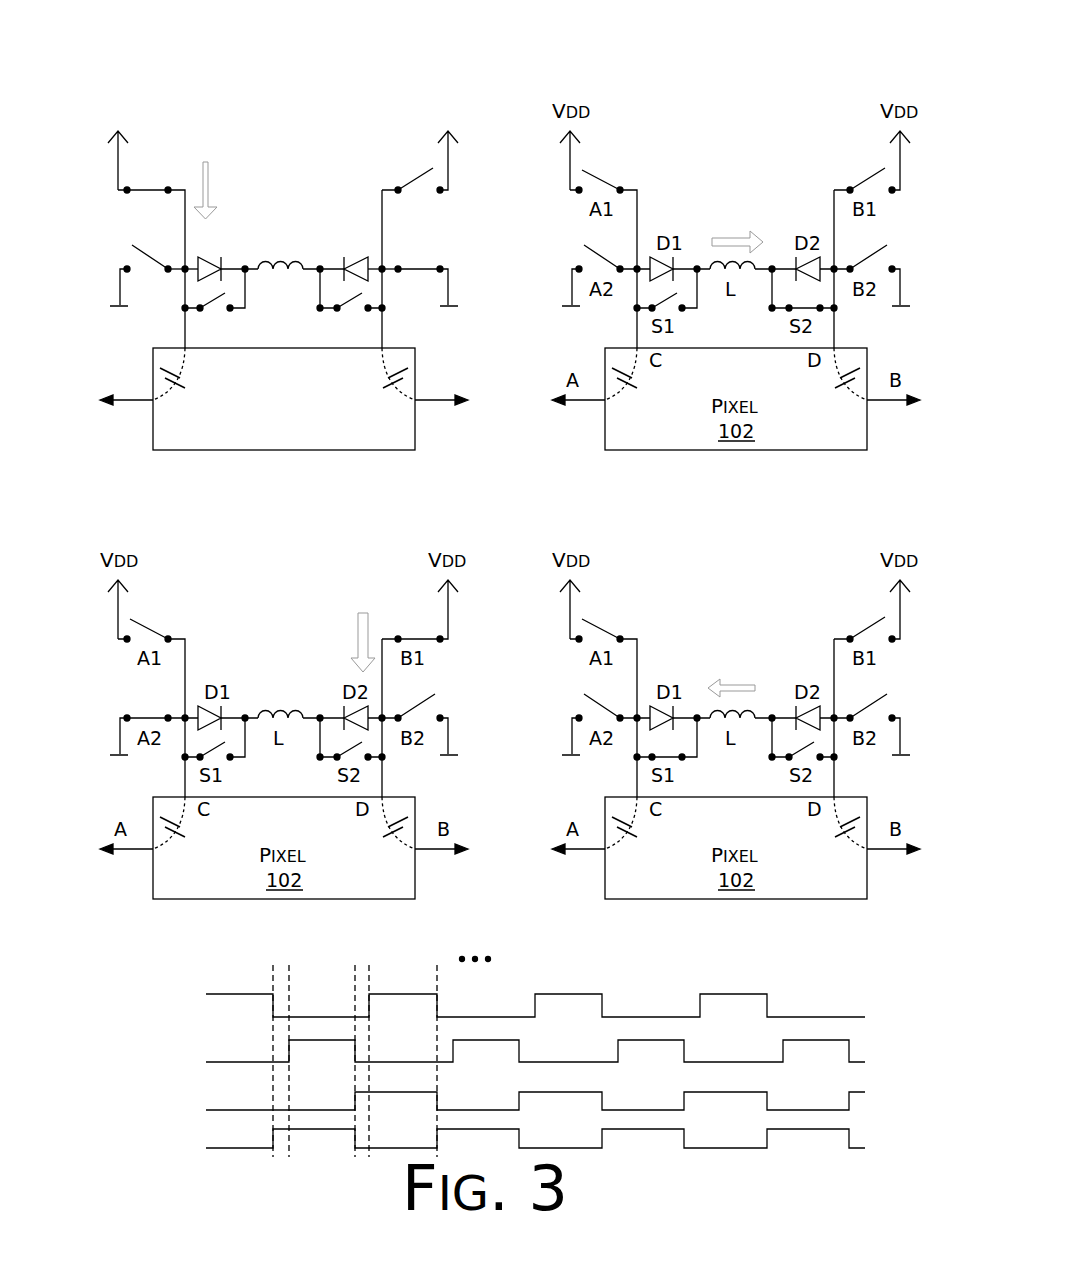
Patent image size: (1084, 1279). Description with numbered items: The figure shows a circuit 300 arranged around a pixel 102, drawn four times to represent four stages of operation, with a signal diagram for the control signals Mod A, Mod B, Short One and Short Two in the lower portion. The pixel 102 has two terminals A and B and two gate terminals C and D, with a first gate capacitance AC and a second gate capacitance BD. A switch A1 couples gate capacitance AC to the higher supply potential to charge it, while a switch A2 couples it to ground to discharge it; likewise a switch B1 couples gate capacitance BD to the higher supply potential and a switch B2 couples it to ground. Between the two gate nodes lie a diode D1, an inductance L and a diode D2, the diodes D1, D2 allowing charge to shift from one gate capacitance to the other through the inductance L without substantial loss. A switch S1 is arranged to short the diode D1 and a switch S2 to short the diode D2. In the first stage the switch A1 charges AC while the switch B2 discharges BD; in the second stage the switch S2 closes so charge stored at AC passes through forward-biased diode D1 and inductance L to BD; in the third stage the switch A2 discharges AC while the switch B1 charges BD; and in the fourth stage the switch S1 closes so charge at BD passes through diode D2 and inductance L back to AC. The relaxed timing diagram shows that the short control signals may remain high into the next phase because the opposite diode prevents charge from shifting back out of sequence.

The circuit 300 is at (848, 62).
The pixel 102 is at (303, 441).
The switch A1 is at (147, 203).
The switch A2 is at (140, 275).
The switch B1 is at (419, 194).
The switch B2 is at (426, 286).
The diode D1 is at (214, 256).
The diode D2 is at (355, 256).
The inductance L is at (280, 281).
The switch S1 is at (213, 303).
The switch S2 is at (351, 303).